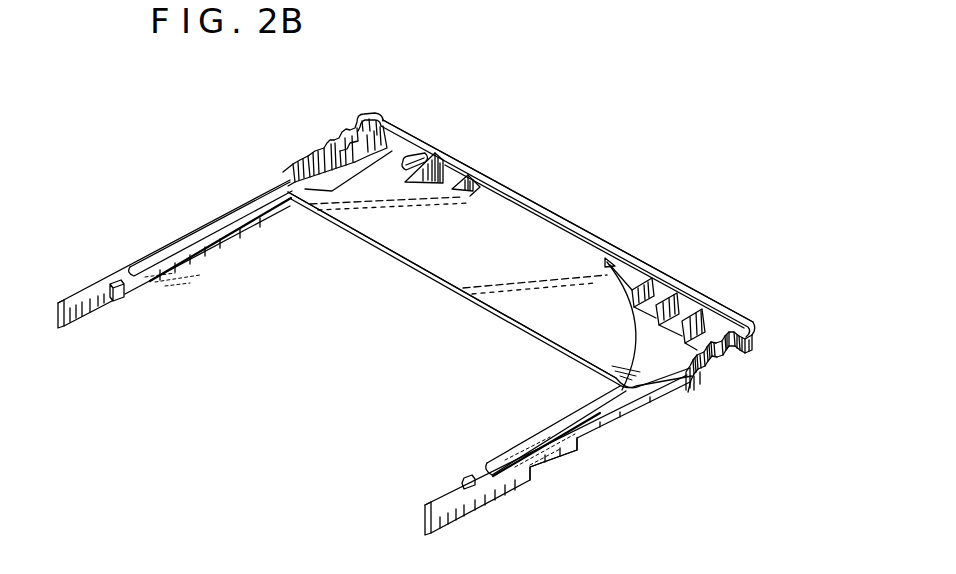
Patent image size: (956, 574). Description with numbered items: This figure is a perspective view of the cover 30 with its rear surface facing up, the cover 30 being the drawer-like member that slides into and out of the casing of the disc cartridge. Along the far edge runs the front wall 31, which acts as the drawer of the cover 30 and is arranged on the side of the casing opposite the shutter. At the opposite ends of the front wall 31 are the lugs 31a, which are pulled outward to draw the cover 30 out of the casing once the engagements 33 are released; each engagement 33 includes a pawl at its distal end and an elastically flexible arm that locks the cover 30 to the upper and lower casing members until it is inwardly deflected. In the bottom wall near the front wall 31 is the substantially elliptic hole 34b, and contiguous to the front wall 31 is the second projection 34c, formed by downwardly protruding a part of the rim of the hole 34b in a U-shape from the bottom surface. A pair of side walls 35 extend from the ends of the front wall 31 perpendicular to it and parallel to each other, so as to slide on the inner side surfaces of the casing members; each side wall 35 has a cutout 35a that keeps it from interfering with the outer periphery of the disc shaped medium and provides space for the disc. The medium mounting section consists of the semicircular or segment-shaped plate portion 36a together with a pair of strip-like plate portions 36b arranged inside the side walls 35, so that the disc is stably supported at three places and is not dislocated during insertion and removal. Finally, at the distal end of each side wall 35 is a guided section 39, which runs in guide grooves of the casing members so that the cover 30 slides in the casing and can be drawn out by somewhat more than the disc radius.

The cover 30 is at (540, 190).
The front wall 31 is at (580, 230).
The lug 31a is at (368, 113).
The engagement 33 is at (325, 143).
The elliptic hole 34b is at (412, 152).
The second projection 34c is at (427, 154).
The side wall 35 is at (183, 227).
The cutout 35a is at (548, 458).
The plate portion 36a is at (480, 280).
The strip-like plate portion 36b is at (200, 240).
The guided section 39 is at (97, 307).